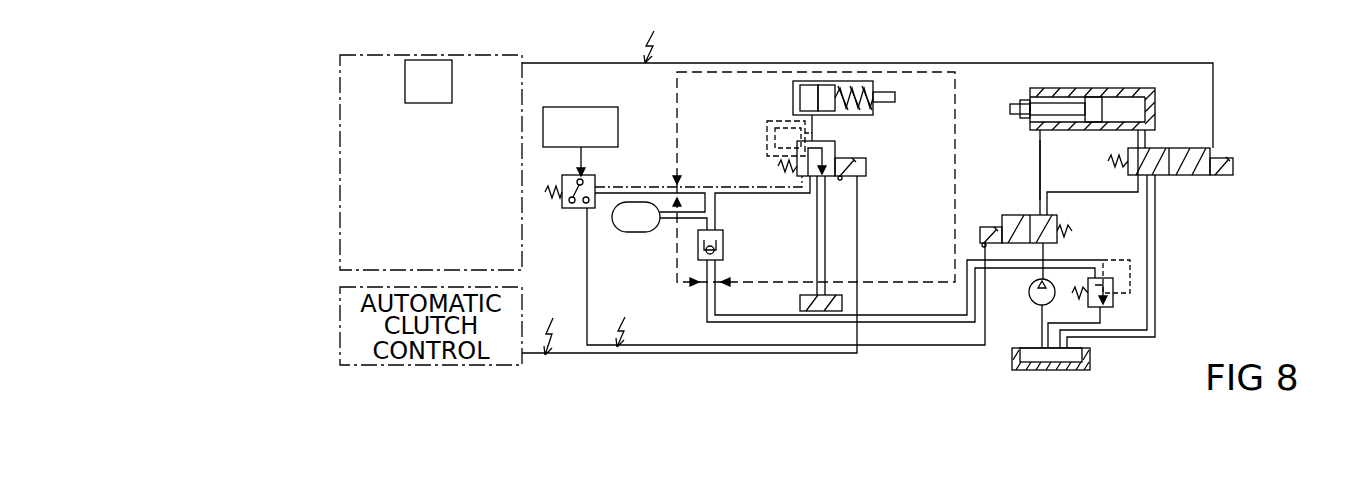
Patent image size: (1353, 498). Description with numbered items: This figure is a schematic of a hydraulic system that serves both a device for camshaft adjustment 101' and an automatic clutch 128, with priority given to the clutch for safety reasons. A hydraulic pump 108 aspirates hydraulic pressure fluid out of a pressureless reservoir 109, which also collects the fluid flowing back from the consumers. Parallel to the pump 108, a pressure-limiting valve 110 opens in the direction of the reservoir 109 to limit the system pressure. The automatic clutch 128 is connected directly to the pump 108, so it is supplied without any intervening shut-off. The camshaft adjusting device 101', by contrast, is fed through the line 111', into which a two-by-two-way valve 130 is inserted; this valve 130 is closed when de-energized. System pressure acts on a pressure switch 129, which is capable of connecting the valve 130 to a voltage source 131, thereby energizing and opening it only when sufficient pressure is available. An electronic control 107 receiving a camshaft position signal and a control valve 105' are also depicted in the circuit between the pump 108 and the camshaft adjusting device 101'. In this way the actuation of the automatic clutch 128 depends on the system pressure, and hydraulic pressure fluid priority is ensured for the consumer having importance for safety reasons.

The signal for camshaft position (electronic control) 107 is at (340, 140).
The voltage source 131 is at (590, 112).
The pressure switch 129 is at (583, 210).
The automatic clutch 128 is at (762, 134).
The 2/2-way valve 130 is at (1022, 213).
The hydraulic pump 108 is at (1032, 297).
The pressure-limiting valve 110 is at (1105, 306).
The reservoir 109 is at (1070, 371).
The device for camshaft adjustment 101' is at (1153, 81).
The line 111' is at (1086, 170).
The control valve 105' is at (1189, 185).